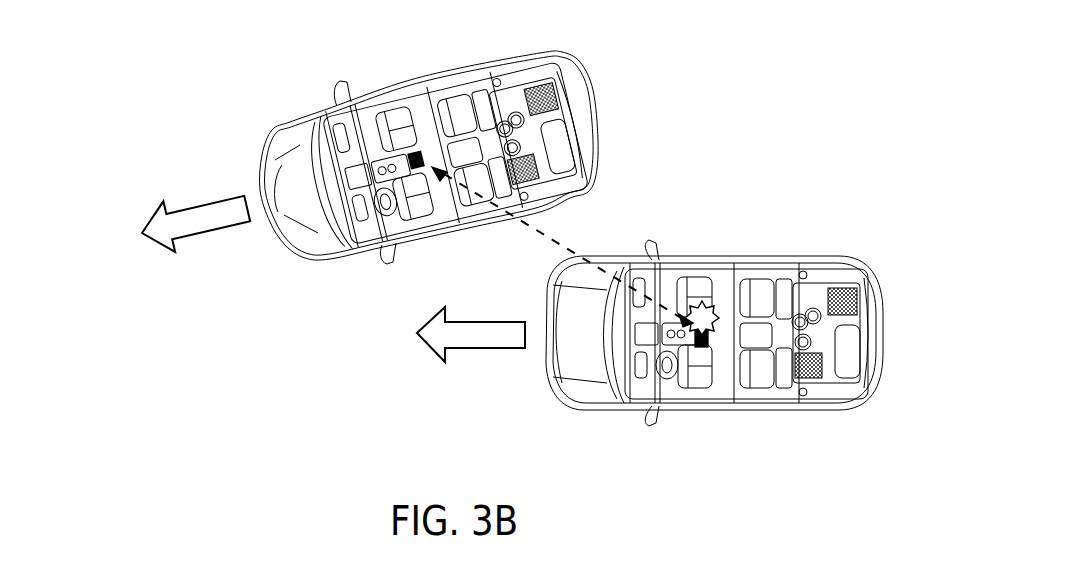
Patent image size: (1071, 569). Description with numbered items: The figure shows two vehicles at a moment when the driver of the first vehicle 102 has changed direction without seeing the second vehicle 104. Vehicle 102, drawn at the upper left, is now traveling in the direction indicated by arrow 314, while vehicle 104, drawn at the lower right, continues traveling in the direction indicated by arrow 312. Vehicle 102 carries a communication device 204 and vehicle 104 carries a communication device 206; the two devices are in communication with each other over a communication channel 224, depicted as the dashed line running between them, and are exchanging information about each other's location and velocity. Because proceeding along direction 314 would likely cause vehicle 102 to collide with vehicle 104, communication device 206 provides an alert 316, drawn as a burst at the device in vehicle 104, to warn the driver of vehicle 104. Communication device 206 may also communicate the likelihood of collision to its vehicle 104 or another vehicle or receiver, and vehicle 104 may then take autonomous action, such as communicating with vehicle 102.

The vehicle 102 is at (590, 113).
The vehicle 104 is at (883, 340).
The communication device 204 is at (413, 149).
The communication device 206 is at (709, 348).
The communication channel 224 is at (540, 235).
The arrow 312 is at (415, 322).
The arrow 314 is at (166, 250).
The alert 316 is at (713, 303).